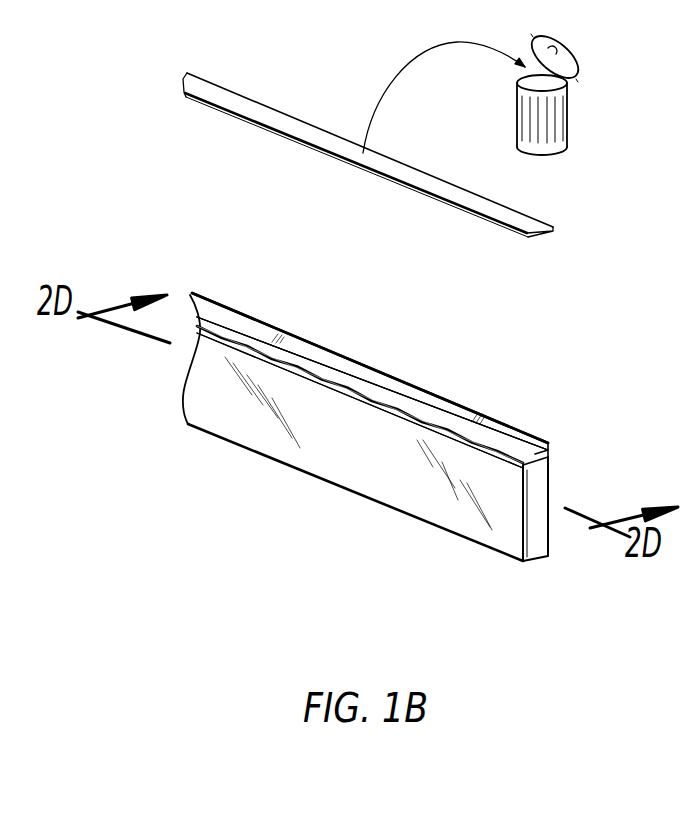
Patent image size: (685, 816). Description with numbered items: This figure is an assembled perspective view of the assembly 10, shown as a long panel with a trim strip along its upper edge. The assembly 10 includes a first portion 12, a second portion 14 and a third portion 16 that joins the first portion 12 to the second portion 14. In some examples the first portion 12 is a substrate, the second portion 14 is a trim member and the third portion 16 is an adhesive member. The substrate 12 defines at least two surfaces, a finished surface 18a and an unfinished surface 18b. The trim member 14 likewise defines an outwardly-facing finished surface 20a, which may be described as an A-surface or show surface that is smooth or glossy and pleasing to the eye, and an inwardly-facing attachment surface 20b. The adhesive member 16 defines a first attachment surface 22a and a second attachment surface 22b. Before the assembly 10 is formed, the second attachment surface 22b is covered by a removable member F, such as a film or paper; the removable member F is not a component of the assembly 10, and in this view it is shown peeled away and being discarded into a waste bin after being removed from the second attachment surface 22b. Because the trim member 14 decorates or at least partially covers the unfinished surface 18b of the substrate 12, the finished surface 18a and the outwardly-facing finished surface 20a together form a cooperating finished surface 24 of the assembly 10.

The assembly 10 is at (315, 427).
The first portion 12 is at (274, 438).
The second portion 14 is at (238, 315).
The third portion 16 is at (270, 358).
The finished surface 18a is at (368, 426).
The unfinished surface 18b is at (325, 385).
The outwardly-facing finished surface 20a is at (383, 382).
The inwardly-facing attachment surface 20b is at (350, 387).
The first attachment surface 22a is at (360, 477).
The second attachment surface 22b is at (360, 452).
The cooperating finished surface 24 is at (370, 371).
The removable member F is at (288, 142).